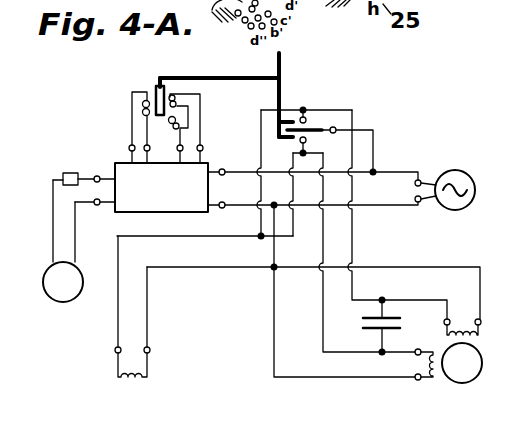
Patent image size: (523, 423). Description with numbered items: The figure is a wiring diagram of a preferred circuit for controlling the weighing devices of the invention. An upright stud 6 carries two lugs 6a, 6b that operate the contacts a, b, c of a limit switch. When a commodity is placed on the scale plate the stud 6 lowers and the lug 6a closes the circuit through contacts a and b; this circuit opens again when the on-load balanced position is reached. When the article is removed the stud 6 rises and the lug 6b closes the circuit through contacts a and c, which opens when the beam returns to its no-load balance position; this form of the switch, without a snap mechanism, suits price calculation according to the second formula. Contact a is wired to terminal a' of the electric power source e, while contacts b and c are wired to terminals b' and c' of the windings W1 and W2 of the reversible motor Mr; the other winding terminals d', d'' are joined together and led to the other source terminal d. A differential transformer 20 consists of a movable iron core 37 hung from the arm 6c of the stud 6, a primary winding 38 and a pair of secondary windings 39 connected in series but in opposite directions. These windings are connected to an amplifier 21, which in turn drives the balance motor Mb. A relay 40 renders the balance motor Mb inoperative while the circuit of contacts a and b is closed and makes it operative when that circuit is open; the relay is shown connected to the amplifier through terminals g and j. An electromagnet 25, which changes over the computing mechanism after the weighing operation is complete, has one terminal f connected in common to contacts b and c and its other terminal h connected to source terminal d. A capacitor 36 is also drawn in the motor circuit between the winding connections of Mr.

The upright stud 6 is at (281, 80).
The lug 6a is at (278, 104).
The lug 6b is at (280, 142).
The arm 6c is at (213, 78).
The differential transformer 20 is at (167, 92).
The amplifier 21 is at (152, 199).
The electromagnet 25 is at (148, 379).
The capacitor 36 is at (375, 327).
The movable iron core 37 is at (156, 96).
The primary winding 38 is at (142, 110).
The secondary windings 39 is at (177, 99).
The relay 40 is at (66, 172).
The contact a is at (333, 106).
The contact b is at (320, 146).
The contact c is at (310, 101).
The terminal d is at (425, 211).
The electric power source e is at (464, 174).
The terminal f is at (110, 351).
The terminal g is at (97, 171).
The terminal h is at (158, 351).
The terminal j is at (97, 206).
The terminal a' is at (428, 164).
The terminal b' is at (420, 334).
The terminal c' is at (457, 315).
The terminal d' is at (491, 316).
The terminal d'' is at (423, 393).
The winding W1 is at (428, 364).
The winding W2 is at (479, 332).
The balance motor Mb is at (63, 241).
The reversible motor Mr is at (462, 363).